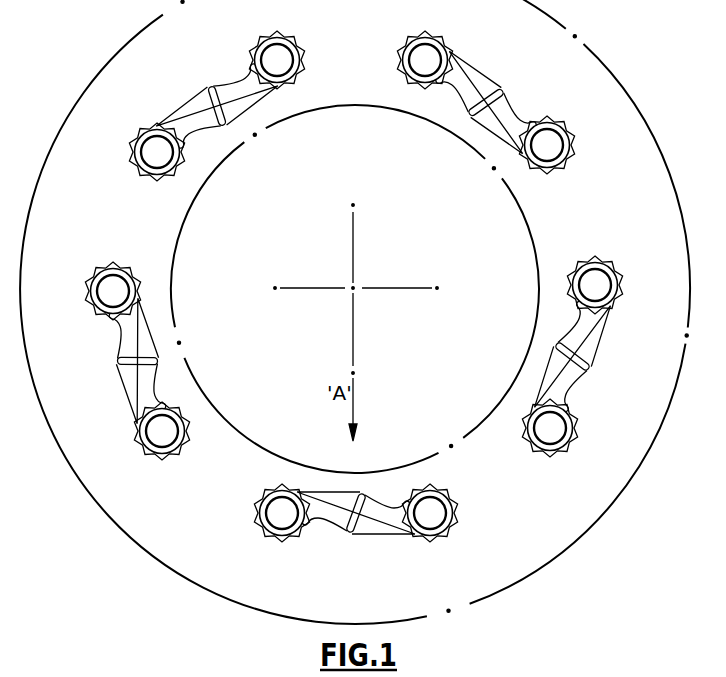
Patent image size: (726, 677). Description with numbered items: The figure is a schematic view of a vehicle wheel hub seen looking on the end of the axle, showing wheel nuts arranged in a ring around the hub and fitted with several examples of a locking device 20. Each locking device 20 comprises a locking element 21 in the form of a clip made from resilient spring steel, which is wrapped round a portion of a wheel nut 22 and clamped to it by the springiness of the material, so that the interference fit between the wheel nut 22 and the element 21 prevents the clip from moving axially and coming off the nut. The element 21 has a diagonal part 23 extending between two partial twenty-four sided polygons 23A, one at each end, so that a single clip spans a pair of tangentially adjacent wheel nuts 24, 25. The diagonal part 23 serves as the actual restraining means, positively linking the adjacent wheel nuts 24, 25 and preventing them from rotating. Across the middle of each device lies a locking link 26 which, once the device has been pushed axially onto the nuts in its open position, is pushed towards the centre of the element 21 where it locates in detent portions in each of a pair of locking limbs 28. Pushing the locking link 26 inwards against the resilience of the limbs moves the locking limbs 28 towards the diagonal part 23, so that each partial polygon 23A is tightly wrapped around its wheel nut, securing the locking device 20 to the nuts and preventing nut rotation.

The locking device 20 is at (185, 101).
The locking element 21 is at (138, 174).
The wheel nut 22 is at (560, 125).
The diagonal part 23 is at (590, 351).
The partial twenty-four sided polygon 23A is at (127, 266).
The wheel nut 24 is at (571, 440).
The wheel nut 25 is at (618, 272).
The locking link 26 is at (118, 360).
The locking limbs 28 is at (317, 491).